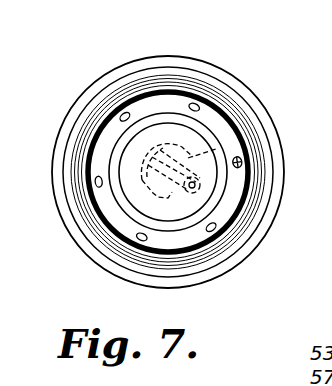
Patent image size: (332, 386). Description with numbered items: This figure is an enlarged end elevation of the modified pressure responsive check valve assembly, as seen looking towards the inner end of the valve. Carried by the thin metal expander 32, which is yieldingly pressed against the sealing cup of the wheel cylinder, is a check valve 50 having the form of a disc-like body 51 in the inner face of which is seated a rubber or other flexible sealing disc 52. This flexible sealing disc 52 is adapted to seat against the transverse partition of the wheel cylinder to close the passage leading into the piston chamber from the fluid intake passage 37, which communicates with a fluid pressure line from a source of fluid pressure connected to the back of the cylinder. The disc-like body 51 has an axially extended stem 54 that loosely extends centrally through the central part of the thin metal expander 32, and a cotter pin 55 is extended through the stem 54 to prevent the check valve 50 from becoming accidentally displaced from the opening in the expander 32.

The thin metal expander 32 is at (226, 92).
The fluid intake passage 37 is at (317, 261).
The check valve 50 is at (155, 114).
The disc-like body 51 is at (118, 150).
The flexible sealing disc 52 is at (131, 199).
The axially extended stem 54 is at (216, 149).
The cotter pin 55 is at (216, 172).